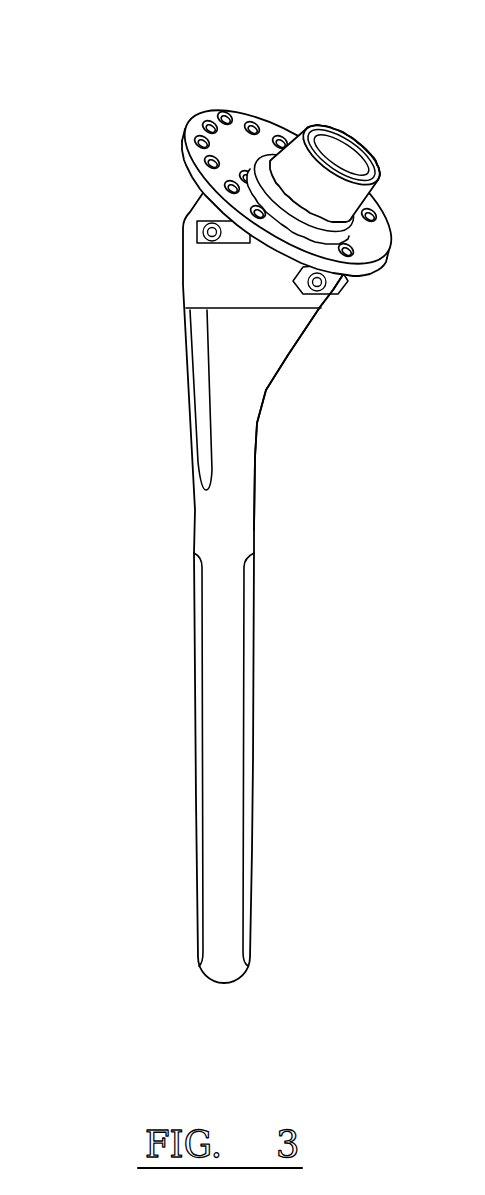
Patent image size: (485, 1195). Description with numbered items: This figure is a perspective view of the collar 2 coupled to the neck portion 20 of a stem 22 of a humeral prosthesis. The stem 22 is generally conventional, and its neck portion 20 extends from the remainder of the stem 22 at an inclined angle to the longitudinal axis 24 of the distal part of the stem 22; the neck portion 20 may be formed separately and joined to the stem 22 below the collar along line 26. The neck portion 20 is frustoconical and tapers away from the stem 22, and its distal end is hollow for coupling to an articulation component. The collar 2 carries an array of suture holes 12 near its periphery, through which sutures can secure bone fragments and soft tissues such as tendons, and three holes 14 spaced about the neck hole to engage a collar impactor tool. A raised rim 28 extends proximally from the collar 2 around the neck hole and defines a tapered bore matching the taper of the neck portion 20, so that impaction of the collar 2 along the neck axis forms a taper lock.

The collar 2 is at (376, 243).
The suture holes 12 is at (222, 113).
The holes 14 is at (199, 179).
The neck portion 20 is at (337, 197).
The stem 22 is at (213, 510).
The longitudinal axis 24 is at (240, 397).
The line 26 is at (255, 309).
The raised rim 28 is at (337, 161).